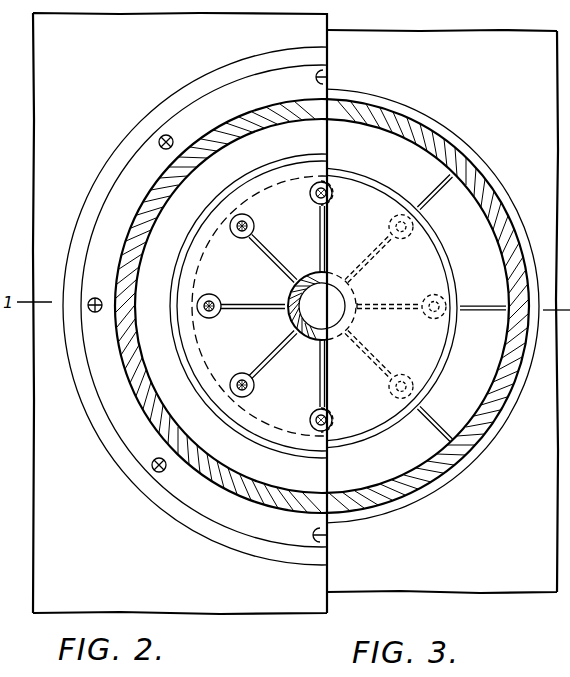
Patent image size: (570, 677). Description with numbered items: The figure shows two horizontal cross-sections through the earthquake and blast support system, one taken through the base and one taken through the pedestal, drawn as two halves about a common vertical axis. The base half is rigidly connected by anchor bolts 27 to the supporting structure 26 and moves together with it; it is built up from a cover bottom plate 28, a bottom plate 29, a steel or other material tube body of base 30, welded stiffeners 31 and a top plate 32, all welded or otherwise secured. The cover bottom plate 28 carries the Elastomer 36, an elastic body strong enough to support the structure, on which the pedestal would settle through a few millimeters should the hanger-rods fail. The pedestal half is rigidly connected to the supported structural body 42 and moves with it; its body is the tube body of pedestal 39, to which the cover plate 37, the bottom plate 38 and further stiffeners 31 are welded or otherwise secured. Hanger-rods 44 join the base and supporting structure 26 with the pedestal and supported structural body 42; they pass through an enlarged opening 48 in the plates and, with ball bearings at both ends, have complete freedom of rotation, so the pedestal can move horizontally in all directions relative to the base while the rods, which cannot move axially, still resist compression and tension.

In FIG. 2, the supporting structure 26 is at (117, 610).
In FIG. 2, the anchor bolts 27 is at (97, 296).
In FIG. 2, the cover bottom plate 28 is at (88, 420).
In FIG. 2, the bottom plate 29 is at (173, 348).
In FIG. 2, the tube body of base 30 is at (148, 423).
In FIG. 2, the stiffeners 31 is at (262, 272).
In FIG. 3, the stiffeners 31 is at (442, 423).
In FIG. 3, the top plate 32 is at (445, 487).
In FIG. 2, the Elastomer 36 is at (190, 367).
In FIG. 3, the cover plate 37 is at (446, 271).
In FIG. 3, the bottom plate 38 is at (457, 272).
In FIG. 2, the tube body of pedestal 39 is at (307, 306).
In FIG. 3, the tube body of pedestal 39 is at (344, 298).
In FIG. 3, the supported structural body 42 is at (467, 590).
In FIG. 2, the Hanger-rods 44 is at (254, 385).
In FIG. 3, the Hanger-rods 44 is at (395, 390).
In FIG. 2, the enlarged opening 48 is at (220, 313).